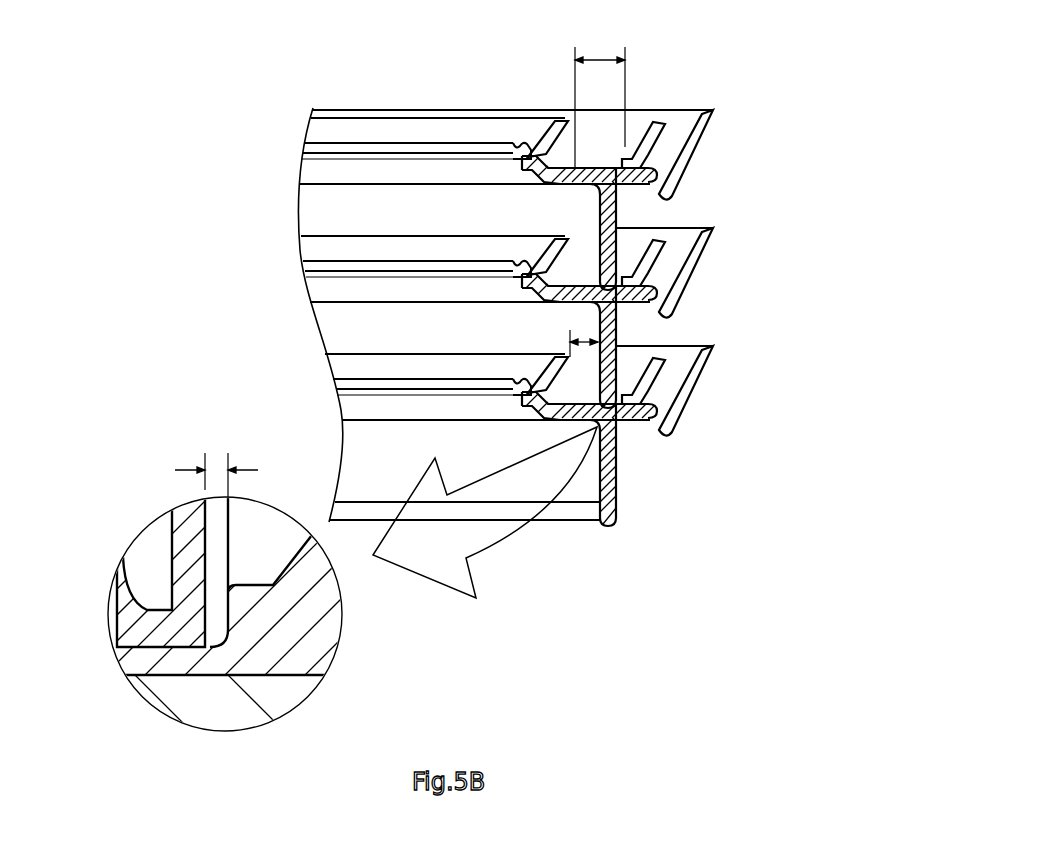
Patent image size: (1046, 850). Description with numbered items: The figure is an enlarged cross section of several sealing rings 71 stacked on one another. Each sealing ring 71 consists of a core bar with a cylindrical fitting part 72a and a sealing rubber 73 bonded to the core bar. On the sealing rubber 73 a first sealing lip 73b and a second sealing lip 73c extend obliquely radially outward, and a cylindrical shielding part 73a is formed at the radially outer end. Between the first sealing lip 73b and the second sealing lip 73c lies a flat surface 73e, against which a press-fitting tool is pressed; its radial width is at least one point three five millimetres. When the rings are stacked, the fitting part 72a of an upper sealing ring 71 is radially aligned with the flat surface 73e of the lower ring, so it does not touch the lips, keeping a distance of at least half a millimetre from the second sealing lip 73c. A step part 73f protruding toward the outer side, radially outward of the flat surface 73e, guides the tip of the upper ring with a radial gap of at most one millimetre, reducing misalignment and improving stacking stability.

The sealing ring 71 is at (789, 97).
The fitting part 72a is at (617, 212).
The sealing rubber 73 is at (163, 628).
The shielding part 73a is at (707, 118).
The first sealing lip 73b is at (660, 127).
The second sealing lip 73c is at (553, 132).
The flat surface 73e is at (602, 163).
The step part 73f is at (640, 170).